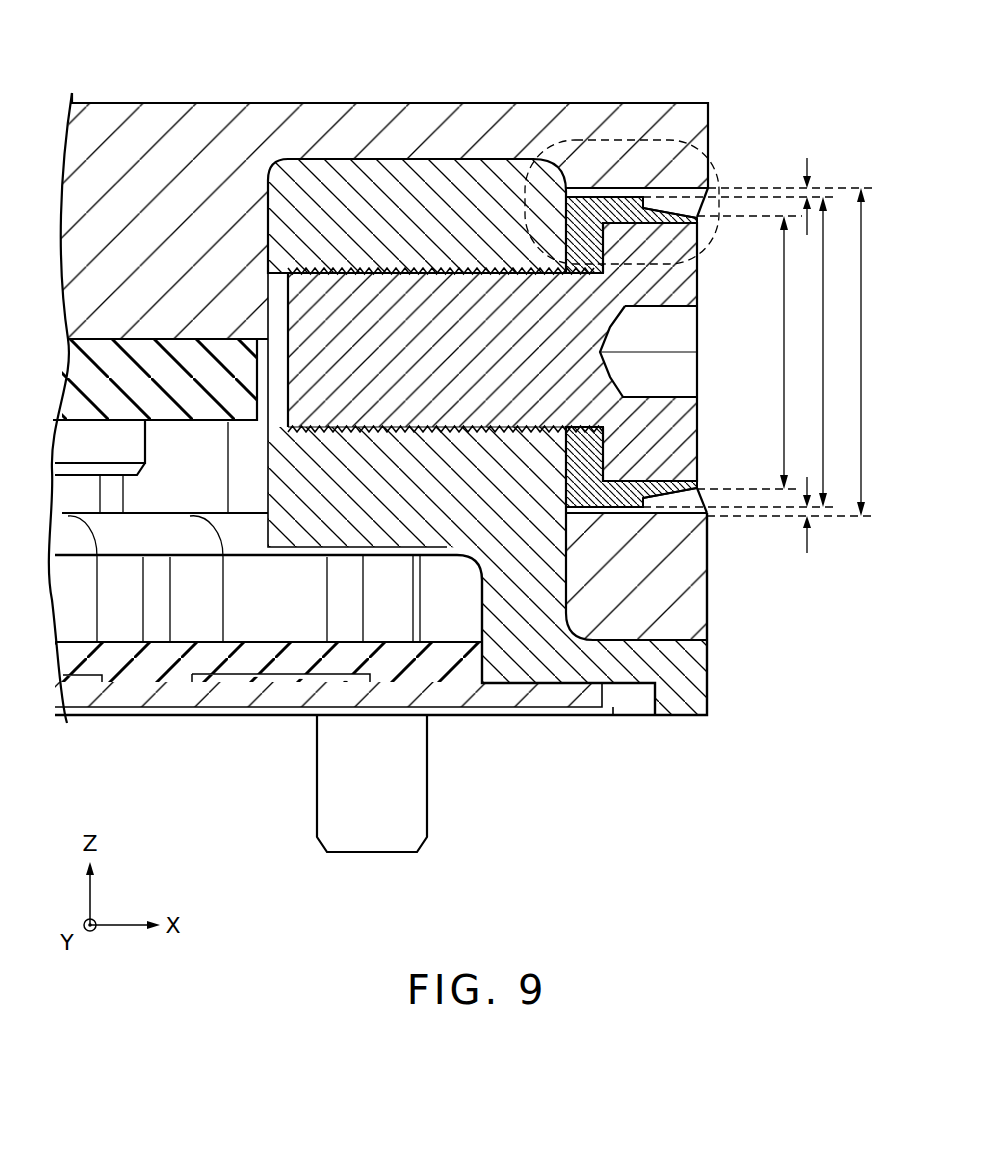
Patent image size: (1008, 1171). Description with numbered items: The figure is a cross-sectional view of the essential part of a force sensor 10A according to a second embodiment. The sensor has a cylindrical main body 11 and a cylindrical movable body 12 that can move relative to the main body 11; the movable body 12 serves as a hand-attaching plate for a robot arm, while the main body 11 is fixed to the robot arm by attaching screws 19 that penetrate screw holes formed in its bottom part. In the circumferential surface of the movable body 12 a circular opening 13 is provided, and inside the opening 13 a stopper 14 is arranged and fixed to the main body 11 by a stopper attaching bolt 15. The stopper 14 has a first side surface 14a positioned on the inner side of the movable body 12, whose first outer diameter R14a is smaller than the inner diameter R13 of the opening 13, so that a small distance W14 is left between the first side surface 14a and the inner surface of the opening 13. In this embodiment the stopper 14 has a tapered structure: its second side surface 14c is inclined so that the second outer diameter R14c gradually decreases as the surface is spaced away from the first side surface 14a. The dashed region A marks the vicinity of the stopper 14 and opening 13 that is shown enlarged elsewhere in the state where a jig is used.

The force sensor 10A is at (228, 74).
The main body 11 is at (395, 226).
The movable body 12 is at (144, 226).
The opening 13 is at (708, 349).
The stopper 14 is at (698, 218).
The first side surface 14a is at (600, 188).
The second side surface 14c is at (670, 208).
The stopper attaching bolt 15 is at (445, 358).
The attaching screw 19 is at (369, 833).
The vicinity A is at (718, 163).
The inner diameter of the opening R13 is at (860, 238).
The first outer diameter R14a is at (821, 455).
The second outer diameter R14c is at (781, 432).
The distance between first side surface and inner surface of opening W14 is at (808, 186).